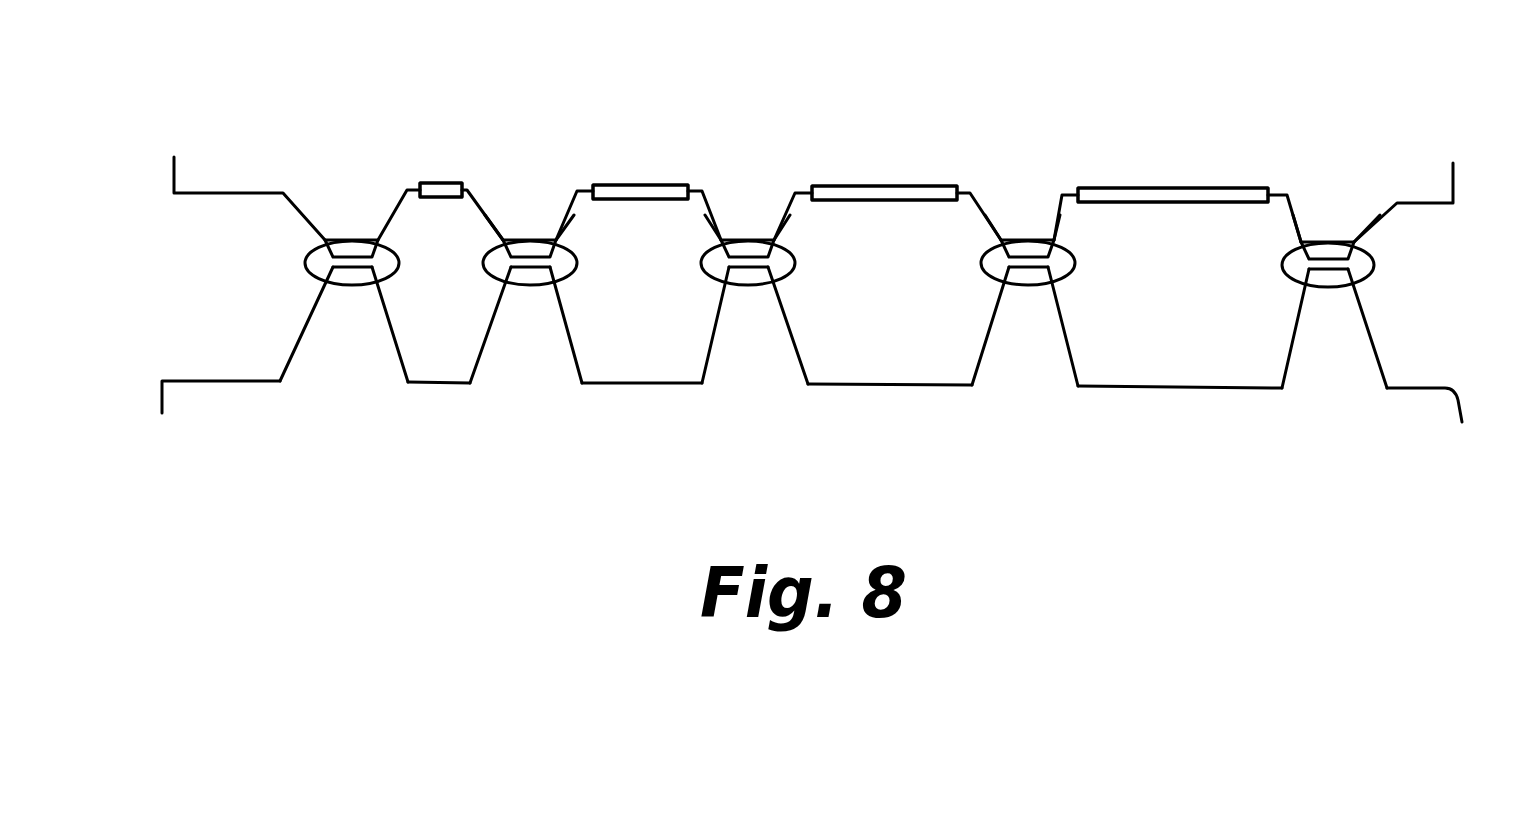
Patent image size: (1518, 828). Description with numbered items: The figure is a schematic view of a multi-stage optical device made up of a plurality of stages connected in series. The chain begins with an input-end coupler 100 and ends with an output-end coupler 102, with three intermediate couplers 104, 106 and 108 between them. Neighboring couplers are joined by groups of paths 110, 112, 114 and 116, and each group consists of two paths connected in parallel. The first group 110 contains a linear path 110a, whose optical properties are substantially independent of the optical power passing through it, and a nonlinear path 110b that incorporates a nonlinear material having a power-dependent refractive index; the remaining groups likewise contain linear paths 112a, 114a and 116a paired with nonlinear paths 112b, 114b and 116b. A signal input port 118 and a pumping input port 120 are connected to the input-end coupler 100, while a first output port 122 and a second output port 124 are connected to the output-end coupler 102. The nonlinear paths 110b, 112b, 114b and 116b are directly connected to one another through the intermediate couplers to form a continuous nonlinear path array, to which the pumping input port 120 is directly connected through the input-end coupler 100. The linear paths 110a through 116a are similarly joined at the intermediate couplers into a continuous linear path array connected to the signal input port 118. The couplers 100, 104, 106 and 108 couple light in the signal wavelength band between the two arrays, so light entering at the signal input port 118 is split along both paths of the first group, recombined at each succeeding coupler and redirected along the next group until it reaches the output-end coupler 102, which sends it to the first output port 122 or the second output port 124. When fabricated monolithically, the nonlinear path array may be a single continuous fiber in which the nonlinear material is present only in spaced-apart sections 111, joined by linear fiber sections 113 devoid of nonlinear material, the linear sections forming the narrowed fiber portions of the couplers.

The input-end coupler 100 is at (348, 238).
The output-end coupler 102 is at (1332, 293).
The intermediate coupler 104 is at (532, 290).
The intermediate coupler 106 is at (745, 290).
The intermediate coupler 108 is at (1027, 290).
The first group of paths 110 is at (444, 293).
The linear path 110a is at (420, 385).
The nonlinear path 110b is at (470, 181).
The nonlinear fiber section 111 is at (440, 197).
The second group of paths 112 is at (638, 294).
The linear path 112a is at (673, 385).
The nonlinear path 112b is at (638, 182).
The linear fiber section 113 is at (555, 222).
The third group of paths 114 is at (887, 294).
The linear path 114a is at (937, 387).
The nonlinear path 114b is at (872, 184).
The fourth group of paths 116 is at (1177, 289).
The linear path 116a is at (1223, 390).
The nonlinear path 116b is at (1167, 186).
The signal input port 118 is at (211, 419).
The pumping input port 120 is at (237, 179).
The first output port 122 is at (1441, 428).
The second output port 124 is at (1418, 184).